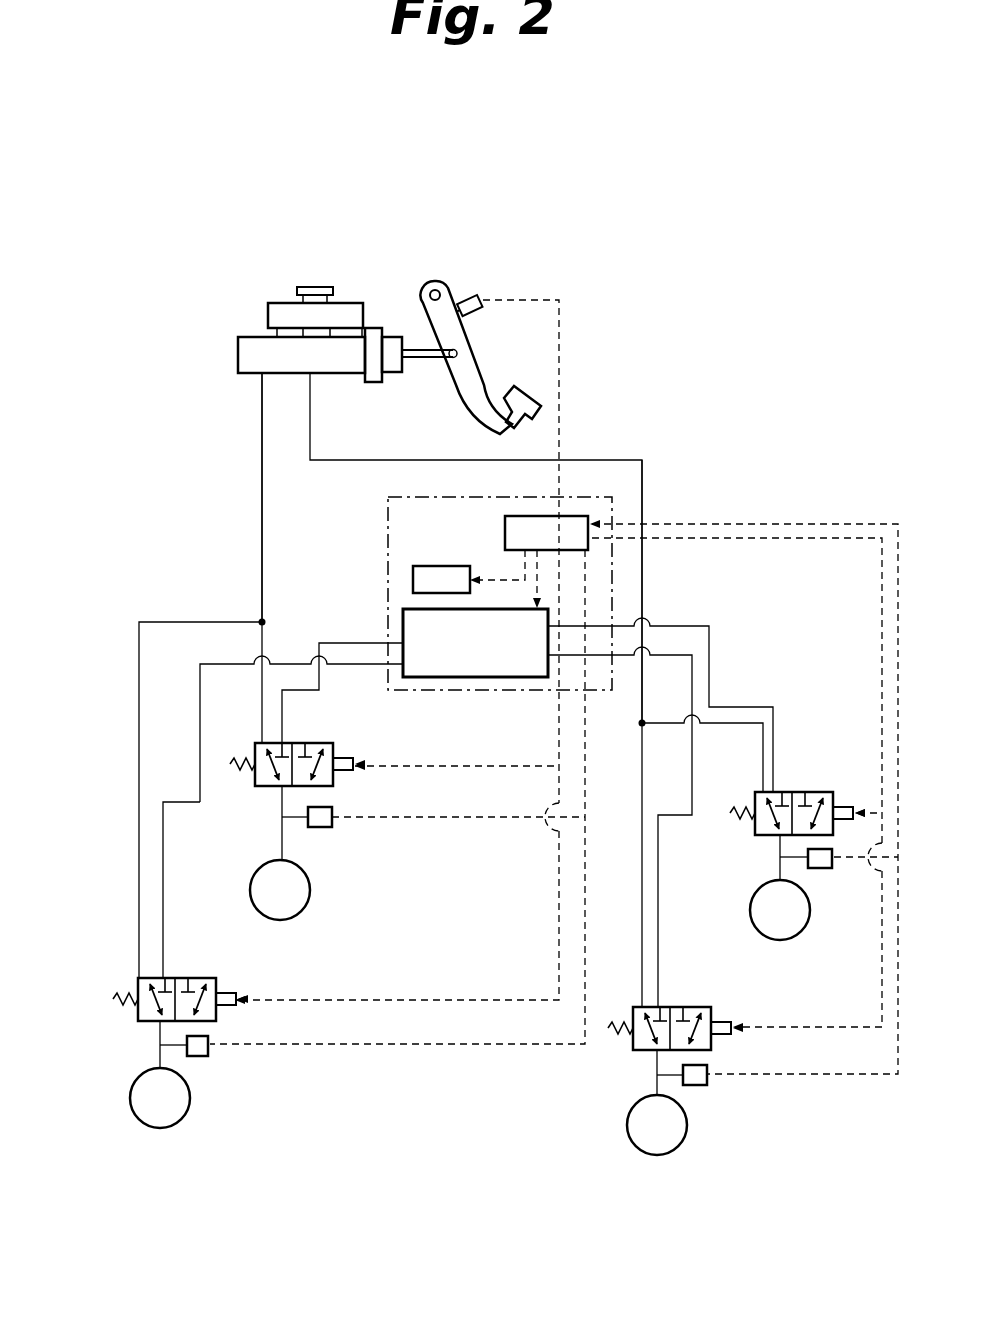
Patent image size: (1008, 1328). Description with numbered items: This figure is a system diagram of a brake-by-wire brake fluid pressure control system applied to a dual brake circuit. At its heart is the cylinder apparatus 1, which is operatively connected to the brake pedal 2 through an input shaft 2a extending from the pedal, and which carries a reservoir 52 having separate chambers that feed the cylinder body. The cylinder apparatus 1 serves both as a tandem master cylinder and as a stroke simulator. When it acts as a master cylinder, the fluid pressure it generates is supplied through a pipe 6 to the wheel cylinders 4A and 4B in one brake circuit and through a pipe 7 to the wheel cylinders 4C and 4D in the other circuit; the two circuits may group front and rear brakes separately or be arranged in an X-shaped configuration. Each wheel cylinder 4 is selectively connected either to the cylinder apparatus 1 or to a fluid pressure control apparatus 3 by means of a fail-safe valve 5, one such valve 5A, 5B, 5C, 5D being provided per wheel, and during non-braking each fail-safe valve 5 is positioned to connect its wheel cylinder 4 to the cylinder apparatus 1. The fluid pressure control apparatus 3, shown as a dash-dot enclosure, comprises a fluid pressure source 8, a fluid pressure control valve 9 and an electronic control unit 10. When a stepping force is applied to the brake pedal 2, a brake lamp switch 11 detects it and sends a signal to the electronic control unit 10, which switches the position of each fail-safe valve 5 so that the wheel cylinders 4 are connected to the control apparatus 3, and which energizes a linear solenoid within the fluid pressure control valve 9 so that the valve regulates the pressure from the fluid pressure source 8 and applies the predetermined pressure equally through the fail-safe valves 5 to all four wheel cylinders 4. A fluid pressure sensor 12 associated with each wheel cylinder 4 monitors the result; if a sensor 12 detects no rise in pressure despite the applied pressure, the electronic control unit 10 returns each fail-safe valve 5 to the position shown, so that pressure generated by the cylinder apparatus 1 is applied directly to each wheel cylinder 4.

The cylinder apparatus 1 is at (243, 328).
The brake pedal 2 is at (467, 378).
The input shaft 2a is at (418, 347).
The fluid pressure control apparatus 3 is at (388, 530).
The wheel cylinder 4 is at (148, 1132).
The wheel cylinder 4A is at (170, 1108).
The wheel cylinder 4B is at (285, 900).
The wheel cylinder 4C is at (650, 1135).
The wheel cylinder 4D is at (775, 918).
The fail-safe valve 5 is at (131, 1025).
The fail-safe valve 5A is at (140, 978).
The fail-safe valve 5B is at (256, 744).
The fail-safe valve 5C is at (637, 1052).
The fail-safe valve 5D is at (787, 790).
The pipe 6 is at (262, 462).
The pipe 7 is at (642, 482).
The fluid pressure source 8 is at (425, 578).
The fluid pressure control valve 9 is at (469, 660).
The electronic control unit 10 is at (578, 518).
The brake lamp switch 11 is at (470, 300).
The fluid pressure sensor 12 is at (197, 1050).
The reservoir 52 is at (283, 308).